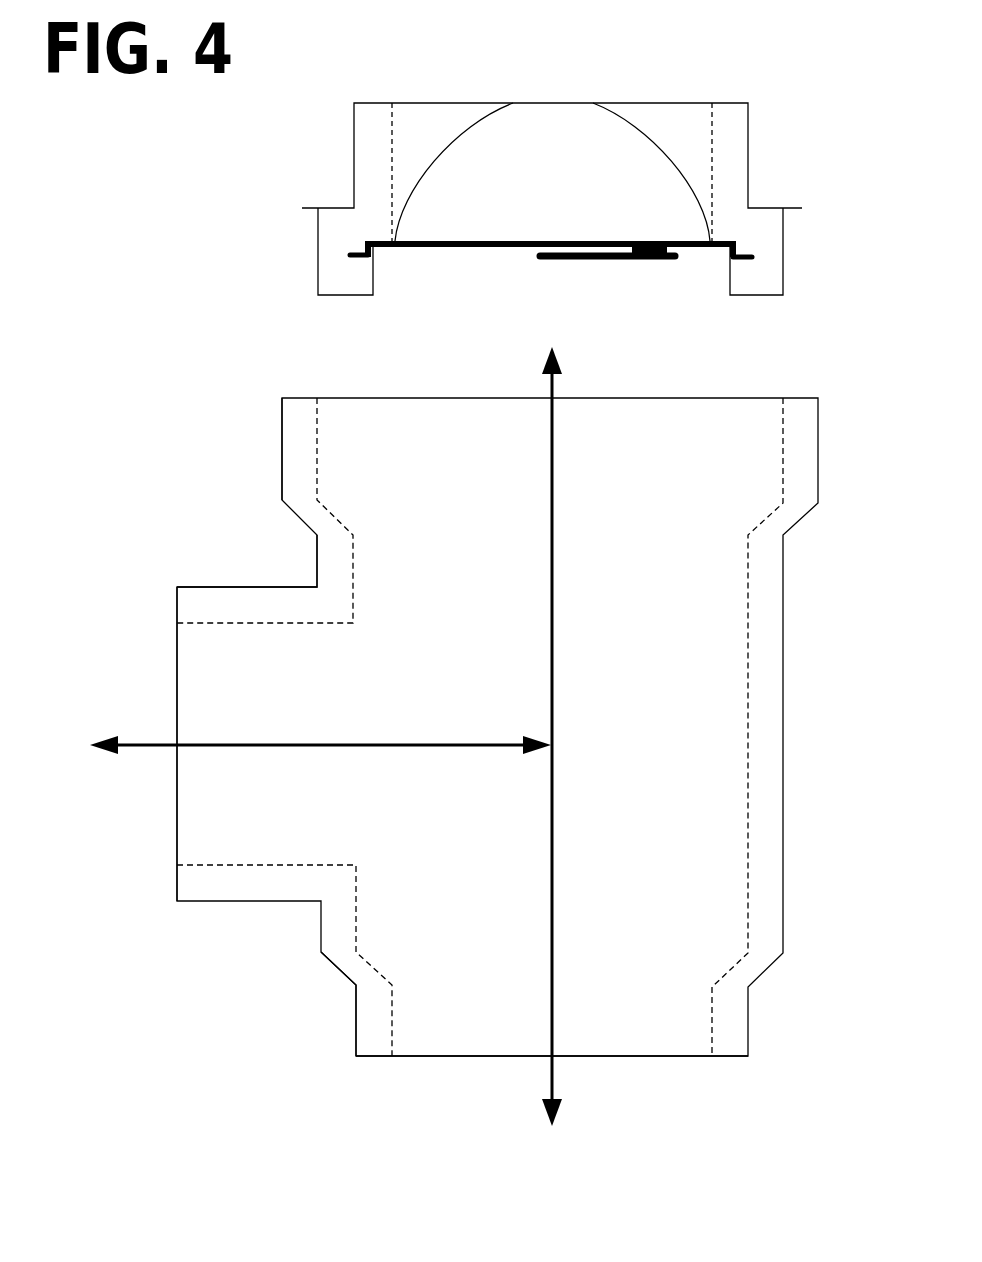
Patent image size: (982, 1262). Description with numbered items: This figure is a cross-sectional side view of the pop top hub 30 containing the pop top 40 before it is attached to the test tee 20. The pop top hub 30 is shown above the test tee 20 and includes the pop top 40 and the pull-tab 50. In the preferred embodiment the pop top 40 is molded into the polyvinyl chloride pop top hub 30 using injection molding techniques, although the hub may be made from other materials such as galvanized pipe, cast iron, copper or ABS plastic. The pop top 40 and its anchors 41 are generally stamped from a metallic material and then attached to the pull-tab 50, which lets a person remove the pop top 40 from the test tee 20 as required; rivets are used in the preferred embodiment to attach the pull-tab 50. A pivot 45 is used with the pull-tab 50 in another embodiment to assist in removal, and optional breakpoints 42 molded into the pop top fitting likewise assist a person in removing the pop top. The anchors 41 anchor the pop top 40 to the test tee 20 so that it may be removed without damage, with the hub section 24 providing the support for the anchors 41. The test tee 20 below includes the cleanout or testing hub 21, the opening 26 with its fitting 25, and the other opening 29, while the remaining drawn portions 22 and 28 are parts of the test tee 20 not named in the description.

The test tee 20 is at (783, 717).
The cleanout or testing hub 21 is at (247, 587).
The flange portion 22 is at (248, 708).
The hub section 24 is at (282, 467).
The fitting 25 is at (372, 173).
The opening 26 is at (463, 120).
The lower step portion 28 is at (355, 1020).
The opening 29 is at (465, 1022).
The pop top hub 30 is at (280, 193).
The pop top 40 is at (498, 246).
The anchors 41 is at (353, 255).
The breakpoints 42 is at (593, 103).
The pivot 45 is at (677, 250).
The pull-tab 50 is at (605, 262).